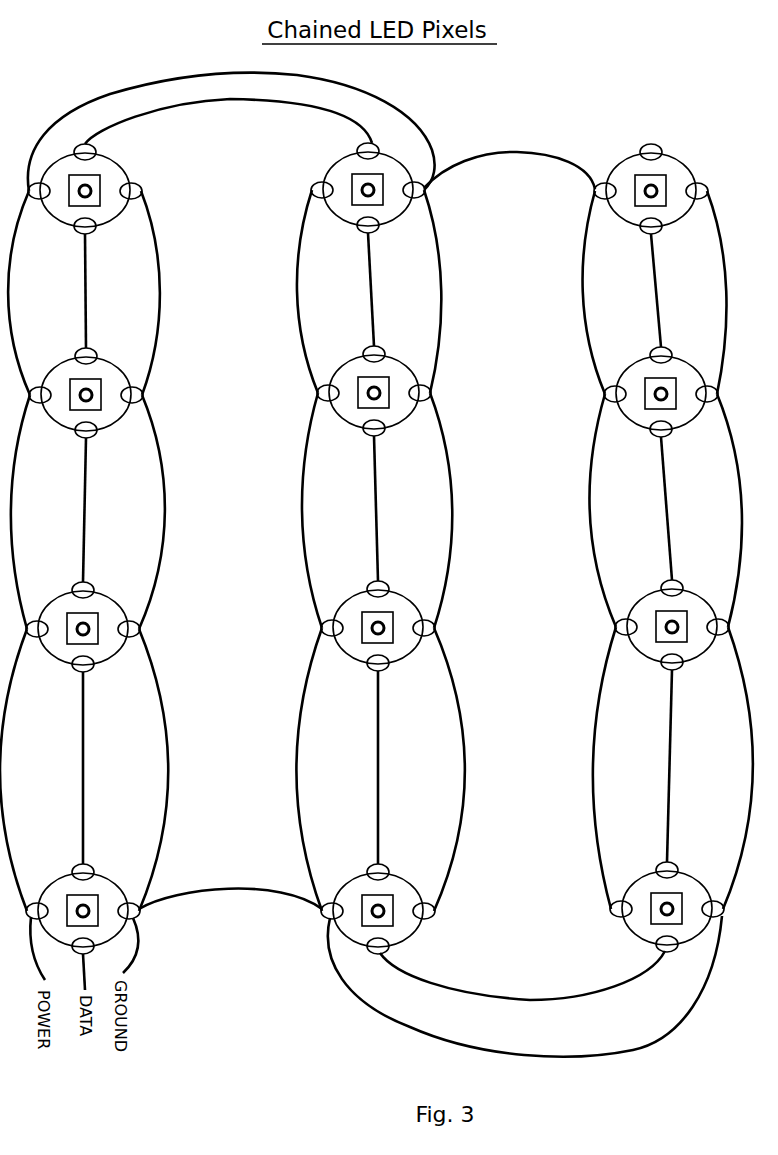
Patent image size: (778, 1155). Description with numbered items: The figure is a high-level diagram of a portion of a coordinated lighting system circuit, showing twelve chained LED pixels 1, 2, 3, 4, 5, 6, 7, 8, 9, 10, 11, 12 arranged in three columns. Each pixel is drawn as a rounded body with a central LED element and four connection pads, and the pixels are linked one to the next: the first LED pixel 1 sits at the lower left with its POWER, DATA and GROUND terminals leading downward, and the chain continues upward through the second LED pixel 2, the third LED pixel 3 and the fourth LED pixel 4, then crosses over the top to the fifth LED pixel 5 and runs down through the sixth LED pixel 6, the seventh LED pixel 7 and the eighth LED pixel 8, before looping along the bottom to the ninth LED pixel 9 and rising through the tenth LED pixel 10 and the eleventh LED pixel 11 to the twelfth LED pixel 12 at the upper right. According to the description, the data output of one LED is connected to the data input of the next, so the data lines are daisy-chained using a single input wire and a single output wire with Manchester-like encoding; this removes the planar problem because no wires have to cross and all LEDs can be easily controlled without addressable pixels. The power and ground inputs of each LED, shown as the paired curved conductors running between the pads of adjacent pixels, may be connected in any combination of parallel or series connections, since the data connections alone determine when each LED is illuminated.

The LED pixel 1 is at (83, 909).
The LED pixel 2 is at (83, 627).
The LED pixel 3 is at (86, 393).
The LED pixel 4 is at (85, 189).
The LED pixel 5 is at (368, 188).
The LED pixel 6 is at (374, 391).
The LED pixel 7 is at (378, 626).
The LED pixel 8 is at (378, 909).
The LED pixel 9 is at (667, 907).
The LED pixel 10 is at (672, 625).
The LED pixel 11 is at (661, 392).
The LED pixel 12 is at (651, 189).